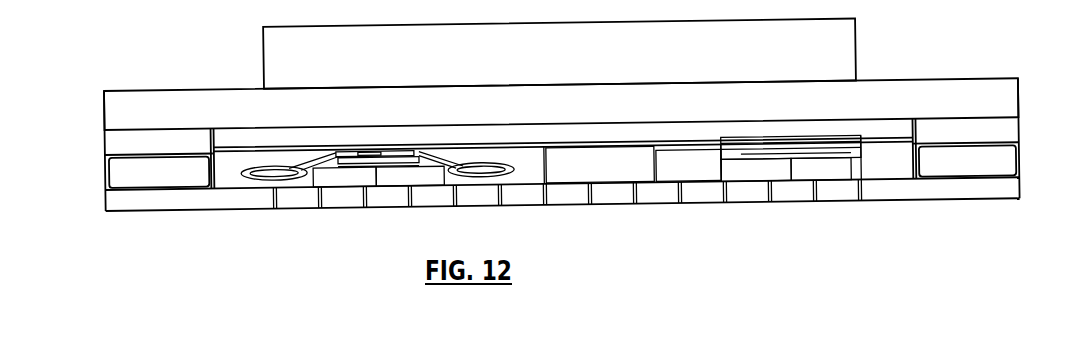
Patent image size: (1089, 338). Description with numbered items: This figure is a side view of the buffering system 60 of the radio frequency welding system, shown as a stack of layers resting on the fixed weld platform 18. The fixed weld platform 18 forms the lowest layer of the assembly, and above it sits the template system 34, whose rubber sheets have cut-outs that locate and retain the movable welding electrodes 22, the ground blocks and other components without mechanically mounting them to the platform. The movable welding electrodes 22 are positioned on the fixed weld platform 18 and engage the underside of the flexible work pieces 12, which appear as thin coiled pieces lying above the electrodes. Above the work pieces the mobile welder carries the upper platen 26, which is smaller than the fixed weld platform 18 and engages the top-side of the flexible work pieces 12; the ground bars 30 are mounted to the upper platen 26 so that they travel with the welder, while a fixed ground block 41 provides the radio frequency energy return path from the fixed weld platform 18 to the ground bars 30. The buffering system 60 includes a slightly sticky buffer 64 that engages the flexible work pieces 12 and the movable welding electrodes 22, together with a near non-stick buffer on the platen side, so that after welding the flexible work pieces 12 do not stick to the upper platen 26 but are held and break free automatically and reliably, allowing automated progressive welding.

The upper platen 26 is at (1007, 93).
The ground bars 30 is at (1013, 135).
The fixed ground block 41 is at (1020, 152).
The fixed weld platform 18 is at (1013, 184).
The flexible work pieces 12 is at (245, 176).
The buffering system 60 is at (722, 149).
The slightly sticky buffer 64 is at (786, 163).
The movable welding electrodes 22 is at (737, 170).
The template system 34 is at (870, 179).